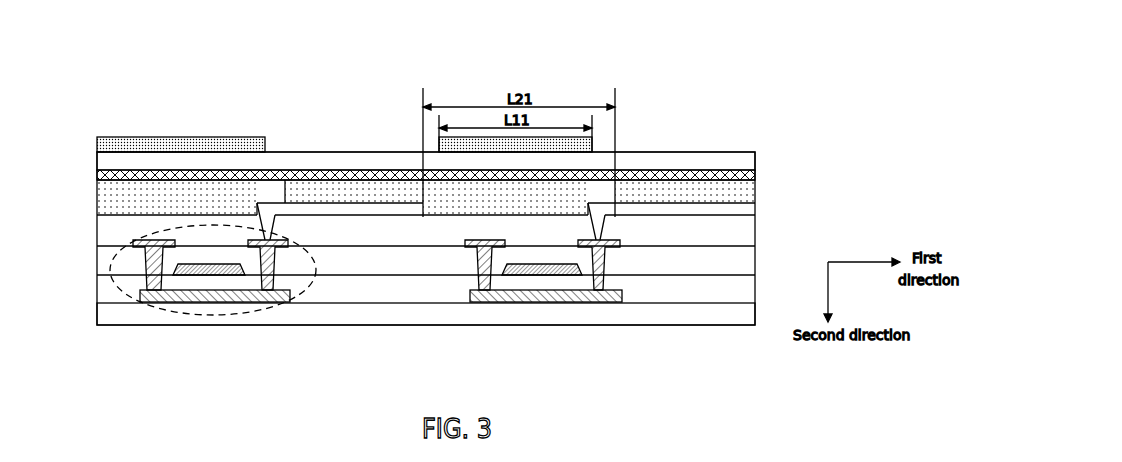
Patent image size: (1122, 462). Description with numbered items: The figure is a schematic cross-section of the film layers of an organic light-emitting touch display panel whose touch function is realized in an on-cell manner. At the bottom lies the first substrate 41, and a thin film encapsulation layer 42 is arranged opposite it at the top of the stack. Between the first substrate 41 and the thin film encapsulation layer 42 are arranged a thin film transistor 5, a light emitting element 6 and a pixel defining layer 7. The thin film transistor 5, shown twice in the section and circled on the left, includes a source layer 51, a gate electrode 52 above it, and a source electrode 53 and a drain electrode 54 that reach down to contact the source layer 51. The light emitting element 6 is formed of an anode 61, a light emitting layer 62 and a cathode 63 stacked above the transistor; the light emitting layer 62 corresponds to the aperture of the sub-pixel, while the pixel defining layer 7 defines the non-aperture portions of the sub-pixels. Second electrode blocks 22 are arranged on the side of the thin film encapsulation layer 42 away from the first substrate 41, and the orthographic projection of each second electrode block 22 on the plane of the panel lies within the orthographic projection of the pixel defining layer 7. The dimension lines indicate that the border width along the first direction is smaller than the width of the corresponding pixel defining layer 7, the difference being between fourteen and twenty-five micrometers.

The second electrode block 22 is at (97, 151).
The pixel defining layer 7 is at (97, 204).
The thin film encapsulation layer 42 is at (755, 153).
The cathode 63 is at (755, 175).
The light emitting layer 62 is at (755, 192).
The anode 61 is at (454, 216).
The light emitting element 6 is at (469, 196).
The first substrate 41 is at (755, 316).
The thin film transistor 5 is at (198, 296).
The source layer 51 is at (188, 302).
The gate electrode 52 is at (238, 273).
The source electrode 53 is at (148, 300).
The drain electrode 54 is at (268, 290).